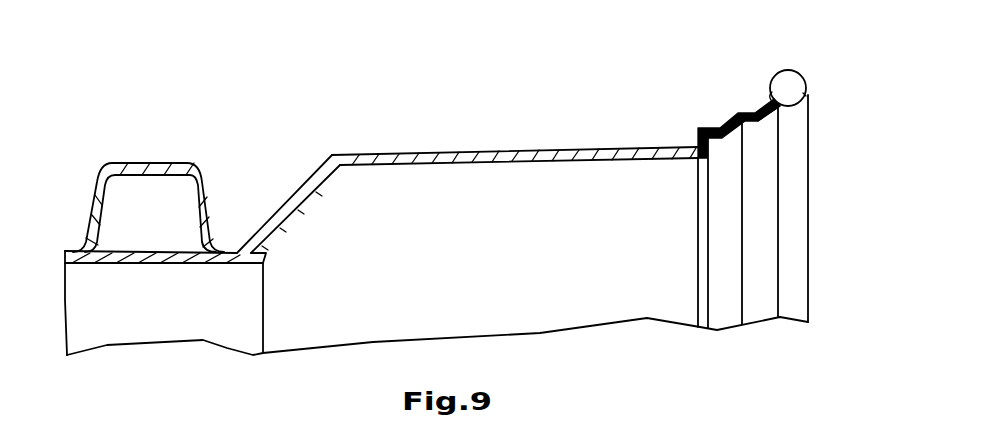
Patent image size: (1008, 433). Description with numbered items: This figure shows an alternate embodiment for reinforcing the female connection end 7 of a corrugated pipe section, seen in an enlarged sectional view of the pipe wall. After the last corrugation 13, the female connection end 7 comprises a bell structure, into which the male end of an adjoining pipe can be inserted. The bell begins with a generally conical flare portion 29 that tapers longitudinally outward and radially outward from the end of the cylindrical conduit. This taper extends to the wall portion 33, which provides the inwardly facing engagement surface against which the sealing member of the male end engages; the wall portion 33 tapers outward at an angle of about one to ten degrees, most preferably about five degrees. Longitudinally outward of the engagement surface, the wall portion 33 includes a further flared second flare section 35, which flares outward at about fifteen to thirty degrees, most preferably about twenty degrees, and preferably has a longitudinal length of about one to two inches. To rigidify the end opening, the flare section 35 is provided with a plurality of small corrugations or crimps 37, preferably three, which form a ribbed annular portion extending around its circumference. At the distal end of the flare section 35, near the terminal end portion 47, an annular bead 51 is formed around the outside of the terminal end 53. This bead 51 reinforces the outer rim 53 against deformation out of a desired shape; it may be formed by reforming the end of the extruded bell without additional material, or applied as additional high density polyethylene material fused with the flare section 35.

The female connection end 7 is at (600, 86).
The corrugation 13 is at (157, 162).
The conical flare portion 29 is at (298, 210).
The wall portion 33 is at (468, 165).
The second flare section 35 is at (768, 119).
The crimps 37 is at (735, 118).
The terminal end portion 47 is at (768, 93).
The annular bead 51 is at (763, 116).
The terminal end 53 is at (805, 95).